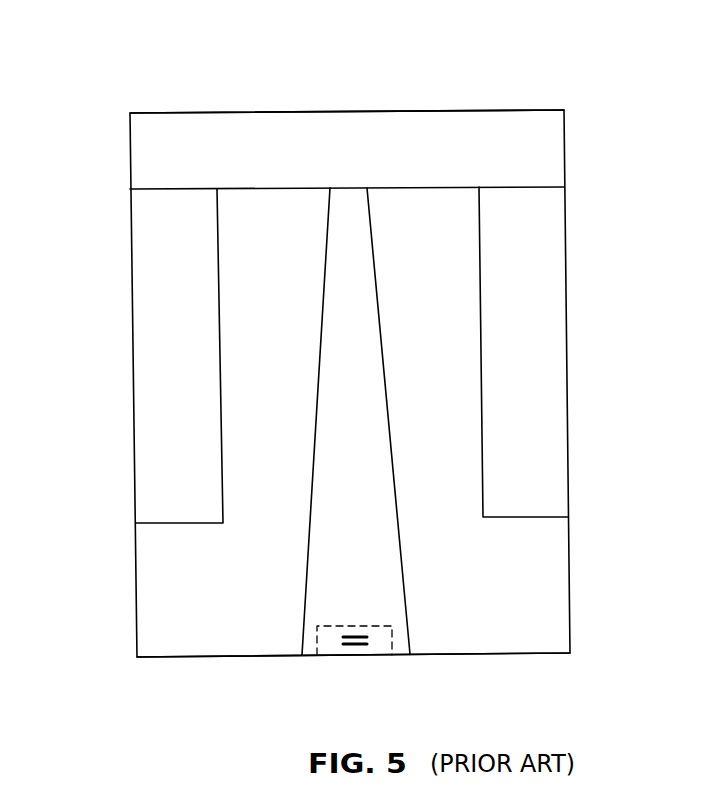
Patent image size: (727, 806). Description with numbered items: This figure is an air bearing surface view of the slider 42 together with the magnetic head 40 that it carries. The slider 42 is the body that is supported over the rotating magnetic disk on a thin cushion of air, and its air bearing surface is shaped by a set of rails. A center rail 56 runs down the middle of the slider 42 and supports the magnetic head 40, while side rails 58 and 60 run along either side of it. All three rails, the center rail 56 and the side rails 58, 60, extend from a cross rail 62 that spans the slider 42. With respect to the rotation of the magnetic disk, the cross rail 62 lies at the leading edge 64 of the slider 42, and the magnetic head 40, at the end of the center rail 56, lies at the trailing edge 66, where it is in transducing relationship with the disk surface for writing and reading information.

The magnetic head 40 is at (333, 655).
The slider 42 is at (128, 610).
The center rail 56 is at (335, 298).
The side rail 58 is at (148, 267).
The side rail 60 is at (548, 262).
The cross rail 62 is at (268, 125).
The leading edge 64 is at (445, 111).
The trailing edge 66 is at (473, 655).